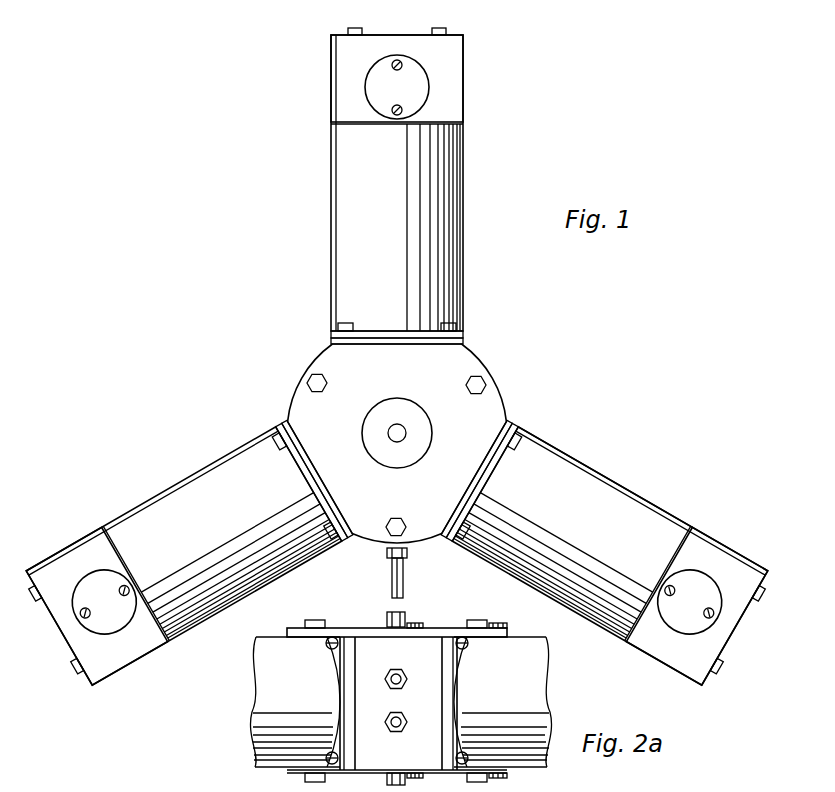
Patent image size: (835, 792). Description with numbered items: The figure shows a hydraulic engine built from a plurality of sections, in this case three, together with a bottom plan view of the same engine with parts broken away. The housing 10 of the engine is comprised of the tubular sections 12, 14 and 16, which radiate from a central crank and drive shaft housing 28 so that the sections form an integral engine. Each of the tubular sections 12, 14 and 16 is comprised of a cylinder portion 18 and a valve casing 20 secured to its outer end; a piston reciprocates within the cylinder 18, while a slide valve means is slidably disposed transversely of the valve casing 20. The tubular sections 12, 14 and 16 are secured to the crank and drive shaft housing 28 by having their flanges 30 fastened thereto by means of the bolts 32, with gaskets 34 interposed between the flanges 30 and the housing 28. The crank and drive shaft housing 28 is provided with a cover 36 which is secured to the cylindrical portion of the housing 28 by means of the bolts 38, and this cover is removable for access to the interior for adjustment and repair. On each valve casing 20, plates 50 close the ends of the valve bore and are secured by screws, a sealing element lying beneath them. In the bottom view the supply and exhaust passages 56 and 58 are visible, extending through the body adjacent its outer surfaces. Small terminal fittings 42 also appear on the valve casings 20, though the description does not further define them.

In FIG. 1, the housing 10 is at (396, 369).
In FIG. 1, the tubular section 12 is at (288, 572).
In FIG. 1, the tubular section 14 is at (466, 203).
In FIG. 1, the tubular section 16 is at (604, 473).
In FIG. 1, the cylinder portion 18 is at (633, 502).
In FIG. 2a, the cylinder portion 18 is at (262, 667).
In FIG. 1, the valve casing 20 is at (467, 107).
In FIG. 1, the crank and drive shaft housing 28 is at (472, 359).
In FIG. 1, the flange 30 is at (343, 336).
In FIG. 1, the bolt 32 is at (458, 324).
In FIG. 1, the gasket 34 is at (452, 343).
In FIG. 1, the cover 36 is at (302, 406).
In FIG. 1, the bolt 38 is at (485, 386).
In FIG. 1, the terminal 42 is at (447, 35).
In FIG. 1, the closure plate 50 is at (422, 74).
In FIG. 2a, the supply and exhaust passage 56 is at (400, 730).
In FIG. 2a, the supply and exhaust passage 58 is at (400, 672).